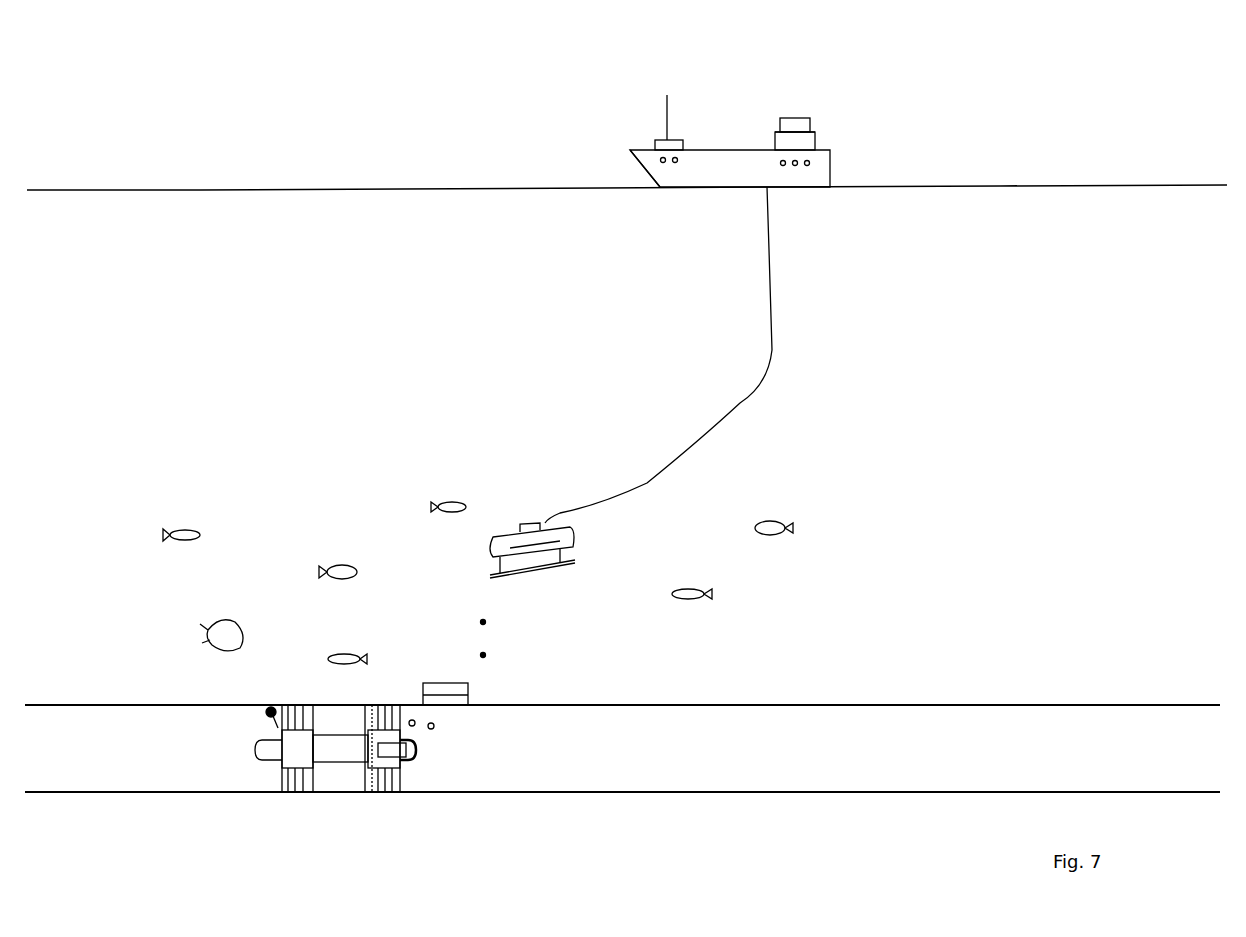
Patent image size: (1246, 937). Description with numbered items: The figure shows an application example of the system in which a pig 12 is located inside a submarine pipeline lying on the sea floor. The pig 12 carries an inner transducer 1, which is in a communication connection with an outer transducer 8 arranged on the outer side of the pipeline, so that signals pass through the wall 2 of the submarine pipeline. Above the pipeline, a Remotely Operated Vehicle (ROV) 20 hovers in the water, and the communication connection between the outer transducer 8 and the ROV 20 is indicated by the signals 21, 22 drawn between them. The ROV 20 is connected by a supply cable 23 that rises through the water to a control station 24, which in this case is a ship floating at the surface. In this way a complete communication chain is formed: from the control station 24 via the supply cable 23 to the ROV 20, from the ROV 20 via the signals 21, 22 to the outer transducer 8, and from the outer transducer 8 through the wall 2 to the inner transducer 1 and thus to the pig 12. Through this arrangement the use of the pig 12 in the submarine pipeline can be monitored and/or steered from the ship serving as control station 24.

The inner transducer 1 is at (413, 760).
The wall 2 is at (786, 703).
The outer transducer 8 is at (440, 683).
The pig 12 is at (343, 757).
The Remotely Operated Vehicle 20 is at (530, 540).
The signal 21 is at (486, 655).
The signal 22 is at (486, 620).
The supply cable 23 is at (760, 382).
The control station 24 is at (740, 165).